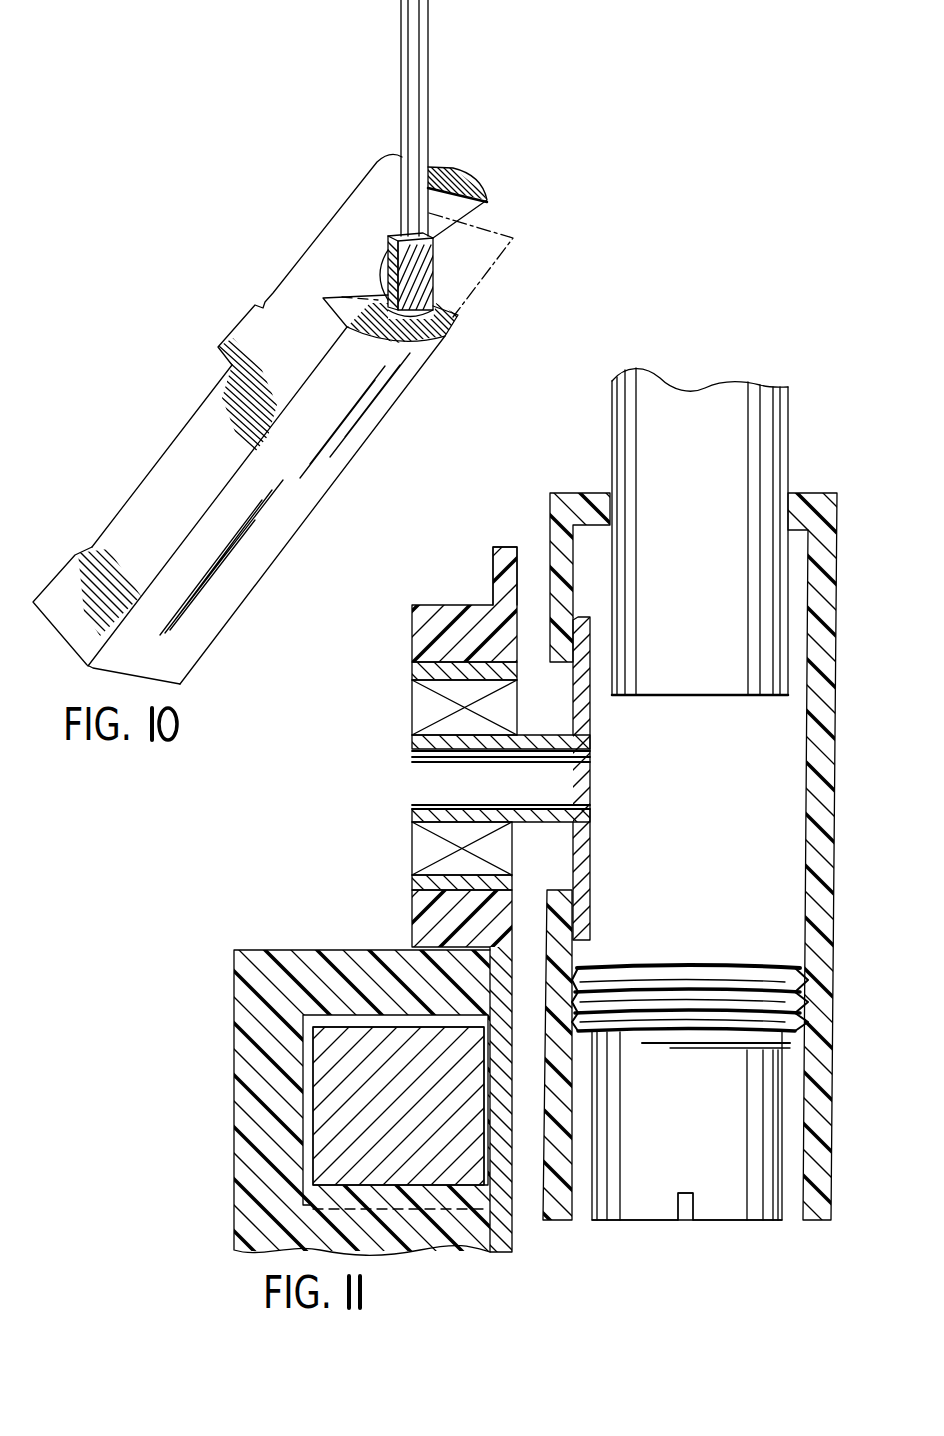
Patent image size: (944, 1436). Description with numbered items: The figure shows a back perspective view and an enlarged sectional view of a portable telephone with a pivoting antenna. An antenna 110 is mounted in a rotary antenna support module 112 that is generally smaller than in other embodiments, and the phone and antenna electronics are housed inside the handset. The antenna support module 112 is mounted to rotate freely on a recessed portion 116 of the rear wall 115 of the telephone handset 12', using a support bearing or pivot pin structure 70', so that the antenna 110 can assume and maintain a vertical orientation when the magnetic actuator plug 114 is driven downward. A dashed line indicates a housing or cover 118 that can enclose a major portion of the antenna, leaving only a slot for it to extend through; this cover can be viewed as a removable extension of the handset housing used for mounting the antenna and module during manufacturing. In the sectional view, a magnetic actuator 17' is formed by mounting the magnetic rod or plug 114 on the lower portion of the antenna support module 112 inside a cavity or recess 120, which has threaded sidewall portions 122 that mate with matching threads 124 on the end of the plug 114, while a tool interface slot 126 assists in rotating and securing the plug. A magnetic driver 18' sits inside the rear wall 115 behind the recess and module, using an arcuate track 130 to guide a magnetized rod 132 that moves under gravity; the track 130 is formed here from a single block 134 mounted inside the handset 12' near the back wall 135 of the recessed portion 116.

In FIG. 10, the antenna 110 is at (425, 89).
In FIG. 11, the antenna 110 is at (770, 417).
In FIG. 11, the rotary antenna support module 112 is at (820, 1073).
In FIG. 10, the magnetic actuator plug 114 is at (423, 293).
In FIG. 11, the magnetic actuator plug 114 is at (691, 1150).
In FIG. 10, the rear wall 115 is at (377, 395).
In FIG. 10, the recessed portion 116 is at (378, 243).
In FIG. 10, the housing or cover 118 is at (505, 247).
In FIG. 11, the cavity or recess 120 is at (585, 1208).
In FIG. 11, the threaded sidewall portions 122 is at (800, 985).
In FIG. 11, the matching threads 124 is at (622, 985).
In FIG. 11, the tool interface slot 126 is at (685, 1210).
In FIG. 10, the arcuate track 130 is at (375, 292).
In FIG. 11, the arcuate track 130 is at (339, 1022).
In FIG. 11, the magnetized rod 132 is at (322, 1087).
In FIG. 11, the single block 134 is at (250, 1022).
In FIG. 11, the back wall 135 is at (502, 563).
In FIG. 10, the telephone handset 12' is at (280, 424).
In FIG. 11, the magnetic actuator 17' is at (723, 1256).
In FIG. 11, the magnetic driver 18' is at (472, 875).
In FIG. 11, the support bearing or pivot pin structure 70' is at (472, 875).